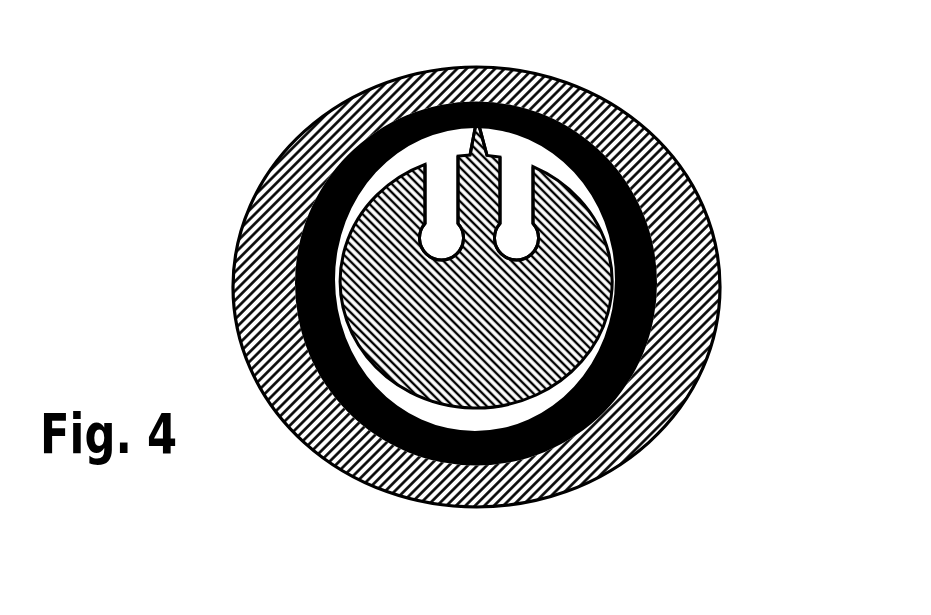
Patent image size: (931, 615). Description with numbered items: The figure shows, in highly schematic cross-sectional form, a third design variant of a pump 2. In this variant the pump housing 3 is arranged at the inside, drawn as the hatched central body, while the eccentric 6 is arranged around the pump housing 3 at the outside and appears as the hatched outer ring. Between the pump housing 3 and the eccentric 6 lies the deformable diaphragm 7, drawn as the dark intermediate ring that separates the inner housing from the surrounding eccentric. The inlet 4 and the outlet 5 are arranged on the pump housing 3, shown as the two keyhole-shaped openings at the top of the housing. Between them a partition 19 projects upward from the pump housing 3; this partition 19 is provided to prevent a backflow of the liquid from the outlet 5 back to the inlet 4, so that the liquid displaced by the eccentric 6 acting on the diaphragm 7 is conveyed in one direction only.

The pump 2 is at (494, 255).
The pump housing 3 is at (568, 203).
The inlet 4 is at (440, 165).
The outlet 5 is at (513, 178).
The eccentric 6 is at (670, 155).
The deformable diaphragm 7 is at (657, 220).
The partition 19 is at (471, 115).